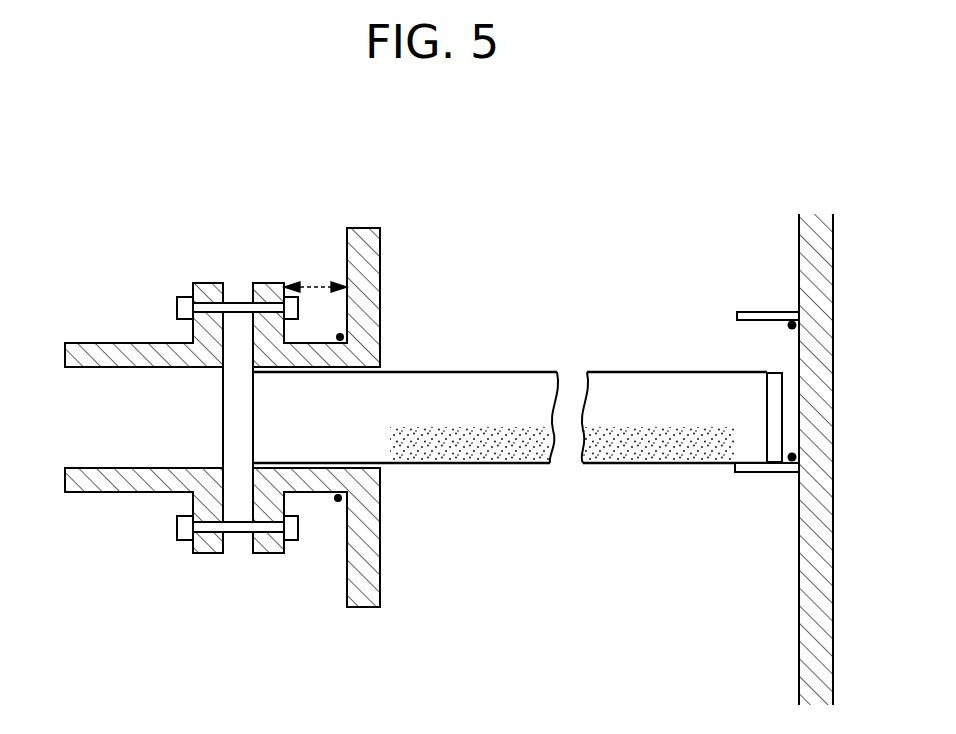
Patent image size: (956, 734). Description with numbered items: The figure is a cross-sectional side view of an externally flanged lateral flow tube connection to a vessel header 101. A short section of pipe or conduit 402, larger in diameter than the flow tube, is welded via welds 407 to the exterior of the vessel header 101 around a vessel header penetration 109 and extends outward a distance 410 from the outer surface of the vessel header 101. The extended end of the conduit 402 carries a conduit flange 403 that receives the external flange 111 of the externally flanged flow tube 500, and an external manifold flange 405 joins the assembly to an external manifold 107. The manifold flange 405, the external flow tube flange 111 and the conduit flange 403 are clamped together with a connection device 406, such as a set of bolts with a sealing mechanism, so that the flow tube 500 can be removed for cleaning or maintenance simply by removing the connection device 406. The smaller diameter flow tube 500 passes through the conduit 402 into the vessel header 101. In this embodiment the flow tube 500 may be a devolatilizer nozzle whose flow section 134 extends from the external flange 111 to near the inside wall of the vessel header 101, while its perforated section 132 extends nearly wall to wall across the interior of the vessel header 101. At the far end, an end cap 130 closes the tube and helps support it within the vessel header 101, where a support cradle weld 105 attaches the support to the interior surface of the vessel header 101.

The vessel header 101 is at (375, 242).
The support cradle weld 105 is at (792, 473).
The external manifold 107 is at (100, 343).
The vessel header penetration 109 is at (377, 370).
The external flange 111 is at (237, 553).
The end cap 130 is at (758, 378).
The perforated section 132 is at (652, 447).
The flow section 134 is at (328, 447).
The section of pipe or conduit 402 is at (313, 495).
The conduit flange 403 is at (267, 553).
The external manifold flange 405 is at (208, 553).
The connection device 406 is at (178, 307).
The weld 407 is at (340, 337).
The distance 410 is at (318, 283).
The externally flanged flow tube 500 is at (483, 372).